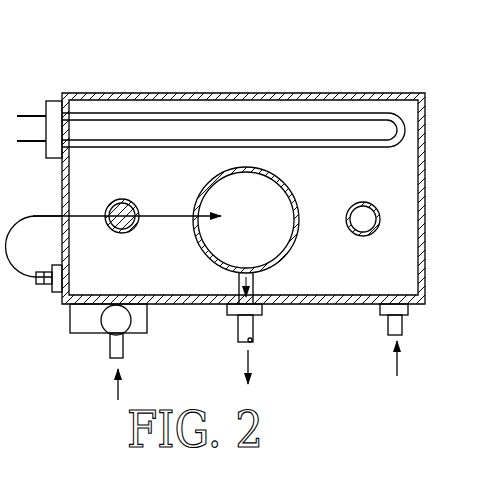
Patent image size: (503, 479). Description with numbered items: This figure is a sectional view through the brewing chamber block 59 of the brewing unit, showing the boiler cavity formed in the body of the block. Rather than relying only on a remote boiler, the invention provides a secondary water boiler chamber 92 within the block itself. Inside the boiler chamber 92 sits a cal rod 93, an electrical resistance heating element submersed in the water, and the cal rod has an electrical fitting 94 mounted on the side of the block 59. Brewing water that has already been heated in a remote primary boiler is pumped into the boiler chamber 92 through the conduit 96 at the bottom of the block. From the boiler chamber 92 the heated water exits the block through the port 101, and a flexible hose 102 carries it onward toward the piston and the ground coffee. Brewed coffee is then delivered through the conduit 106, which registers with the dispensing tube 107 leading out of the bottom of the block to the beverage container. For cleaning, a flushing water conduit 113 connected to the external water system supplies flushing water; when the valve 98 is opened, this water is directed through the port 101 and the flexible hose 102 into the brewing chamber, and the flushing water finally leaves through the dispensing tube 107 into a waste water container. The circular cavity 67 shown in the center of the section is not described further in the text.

The brewing chamber block 59 is at (431, 104).
The water boiler chamber 92 is at (334, 157).
The cal rod 93 is at (133, 113).
The electrical fitting 94 is at (55, 101).
The conduit 96 is at (388, 320).
The valve 98 is at (130, 323).
The port 101 is at (72, 286).
The flexible hose 102 is at (34, 216).
The conduit 106 is at (254, 290).
The dispensing tube 107 is at (255, 325).
The flushing water conduit 113 is at (107, 350).
The chamber 67 is at (298, 232).